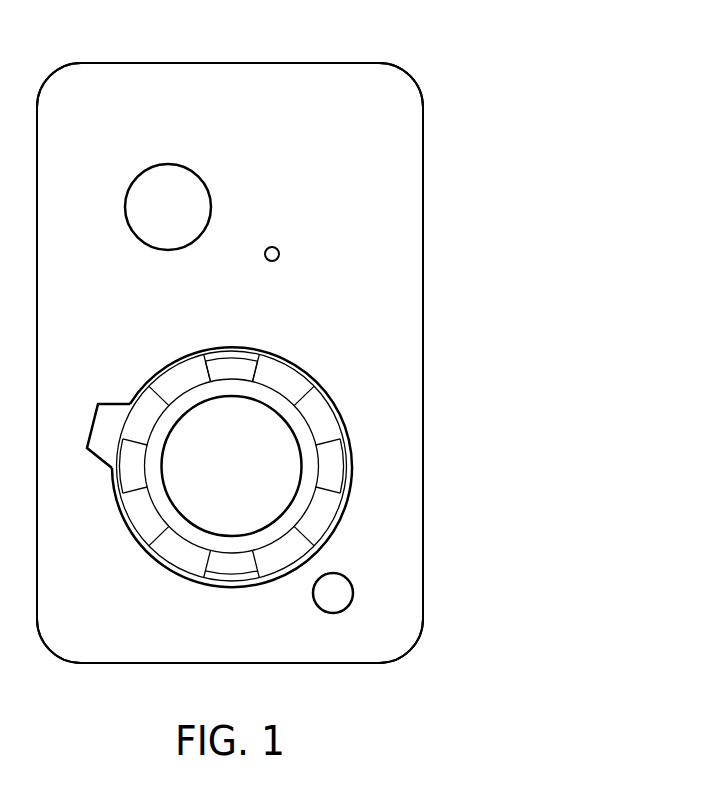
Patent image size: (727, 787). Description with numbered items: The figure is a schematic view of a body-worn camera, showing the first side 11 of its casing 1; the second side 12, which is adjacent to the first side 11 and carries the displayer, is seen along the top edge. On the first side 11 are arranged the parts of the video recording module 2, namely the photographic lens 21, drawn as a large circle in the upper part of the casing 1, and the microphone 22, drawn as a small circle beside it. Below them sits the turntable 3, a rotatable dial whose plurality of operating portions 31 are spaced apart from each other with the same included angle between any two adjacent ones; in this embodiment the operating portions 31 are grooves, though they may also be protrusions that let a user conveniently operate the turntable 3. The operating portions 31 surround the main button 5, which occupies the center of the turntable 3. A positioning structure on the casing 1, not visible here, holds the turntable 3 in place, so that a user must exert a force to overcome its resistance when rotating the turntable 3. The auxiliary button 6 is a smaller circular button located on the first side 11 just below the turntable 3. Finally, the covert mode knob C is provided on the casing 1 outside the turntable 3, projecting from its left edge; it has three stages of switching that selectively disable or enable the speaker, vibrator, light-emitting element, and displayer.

The casing 1 is at (612, 4).
The first side 11 is at (393, 298).
The second side 12 is at (232, 63).
The video recording module 2 is at (612, 92).
The photographic lens 21 is at (167, 178).
The microphone 22 is at (273, 247).
The turntable 3 is at (302, 426).
The operating portions 31 is at (232, 368).
The main button 5 is at (285, 500).
The auxiliary button 6 is at (317, 603).
The covert mode knob C is at (98, 428).